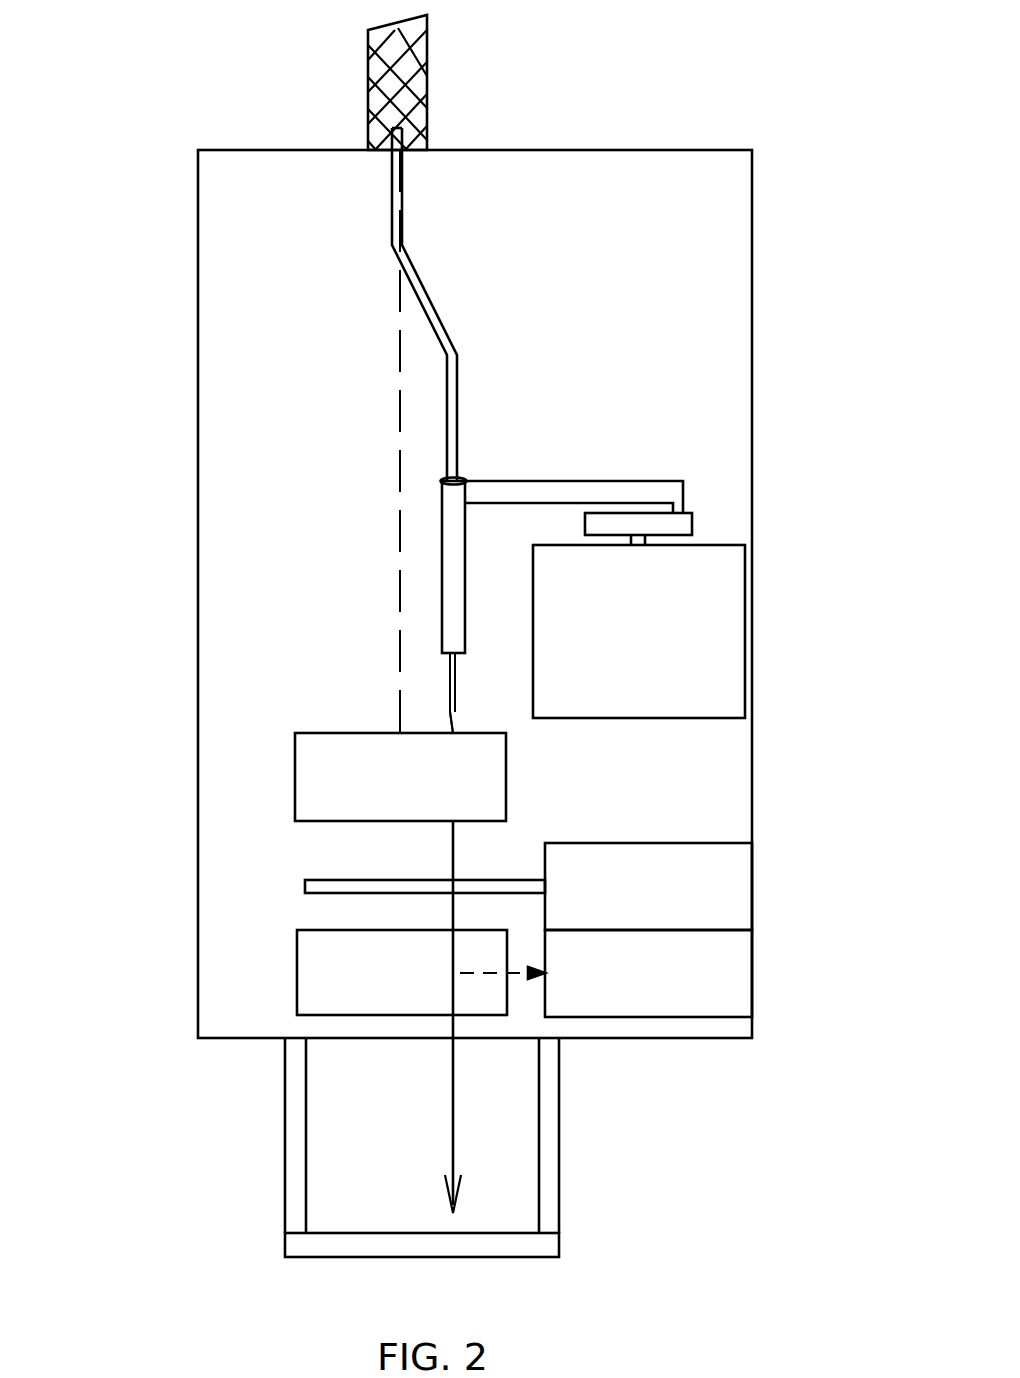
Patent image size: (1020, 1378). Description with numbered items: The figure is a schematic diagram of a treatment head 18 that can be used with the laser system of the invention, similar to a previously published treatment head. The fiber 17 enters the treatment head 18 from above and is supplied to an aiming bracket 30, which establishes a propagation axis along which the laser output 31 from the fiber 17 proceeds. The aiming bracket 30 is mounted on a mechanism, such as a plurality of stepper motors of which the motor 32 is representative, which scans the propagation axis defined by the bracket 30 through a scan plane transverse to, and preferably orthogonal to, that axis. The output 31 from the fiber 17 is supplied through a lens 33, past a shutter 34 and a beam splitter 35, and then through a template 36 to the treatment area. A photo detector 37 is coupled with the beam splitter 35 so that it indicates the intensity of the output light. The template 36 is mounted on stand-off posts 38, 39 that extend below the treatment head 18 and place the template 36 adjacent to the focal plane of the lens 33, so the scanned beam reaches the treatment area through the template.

The fiber 17 is at (400, 218).
The treatment head 18 is at (752, 288).
The aiming bracket 30 is at (442, 578).
The laser output 31 is at (453, 722).
The motor 32 is at (718, 568).
The lens 33 is at (295, 792).
The shutter 34 is at (735, 872).
The beam splitter 35 is at (297, 988).
The template 36 is at (559, 1245).
The photo detector 37 is at (735, 958).
The stand-off post 38 is at (559, 1135).
The stand-off post 39 is at (285, 1165).